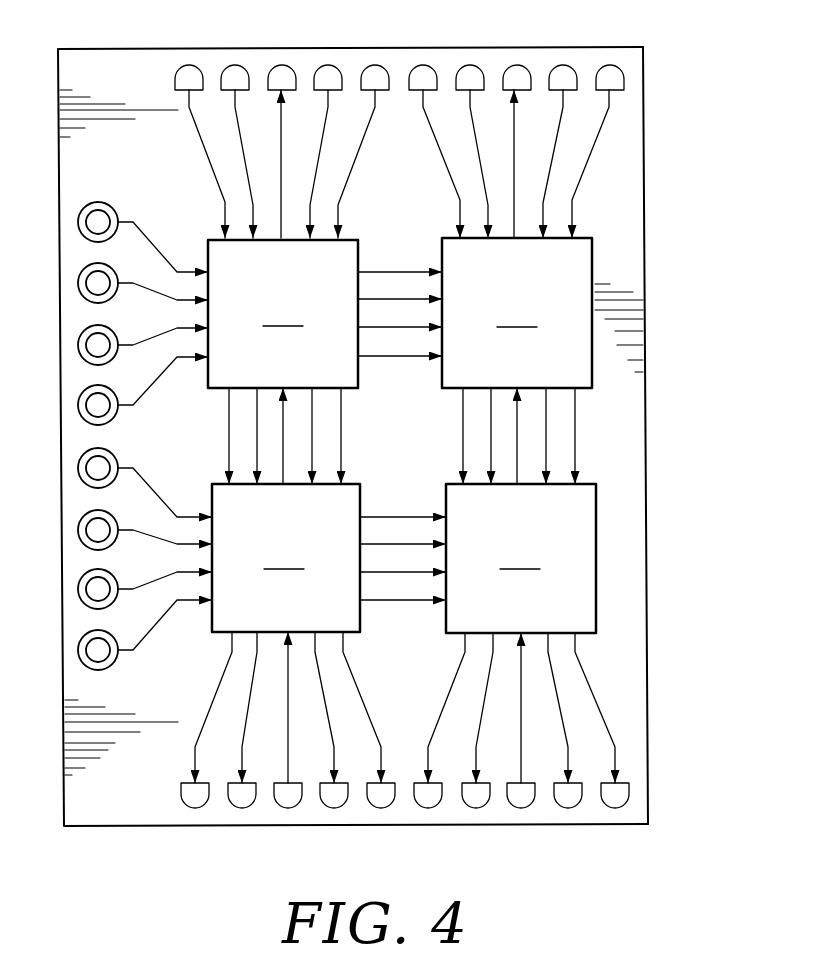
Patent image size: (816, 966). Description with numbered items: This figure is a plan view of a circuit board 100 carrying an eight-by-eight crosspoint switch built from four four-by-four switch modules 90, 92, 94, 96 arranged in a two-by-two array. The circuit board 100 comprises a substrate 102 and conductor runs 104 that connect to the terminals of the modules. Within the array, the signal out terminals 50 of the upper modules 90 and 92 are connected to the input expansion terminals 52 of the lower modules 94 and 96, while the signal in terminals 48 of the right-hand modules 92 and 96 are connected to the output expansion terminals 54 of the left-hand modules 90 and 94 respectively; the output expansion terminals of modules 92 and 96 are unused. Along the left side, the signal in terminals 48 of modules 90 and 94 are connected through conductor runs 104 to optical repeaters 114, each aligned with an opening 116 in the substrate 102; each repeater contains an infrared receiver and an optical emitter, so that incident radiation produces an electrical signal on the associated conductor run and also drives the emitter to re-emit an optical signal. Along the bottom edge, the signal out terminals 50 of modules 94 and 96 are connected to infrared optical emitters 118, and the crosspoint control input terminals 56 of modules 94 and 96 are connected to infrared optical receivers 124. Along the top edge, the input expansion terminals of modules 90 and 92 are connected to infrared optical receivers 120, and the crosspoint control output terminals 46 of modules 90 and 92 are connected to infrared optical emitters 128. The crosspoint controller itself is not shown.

The crosspoint control output terminal 46 is at (514, 164).
The signal in terminal 48 is at (180, 268).
The signal out terminal 50 is at (257, 416).
The input expansion terminal 52 is at (340, 461).
The output expansion terminal 54 is at (373, 268).
The crosspoint control input terminal 56 is at (521, 705).
The switch module 90 is at (283, 314).
The switch module 92 is at (517, 313).
The switch module 94 is at (286, 558).
The switch module 96 is at (521, 558).
The circuit board 100 is at (652, 566).
The substrate 102 is at (648, 665).
The conductor run 104 is at (560, 190).
The optical repeater 114 is at (88, 222).
The opening 116 is at (90, 230).
The infrared optical emitter 118 is at (437, 802).
The infrared optical receiver 120 is at (620, 63).
The infrared optical receiver 124 is at (290, 805).
The infrared optical emitter 128 is at (288, 65).